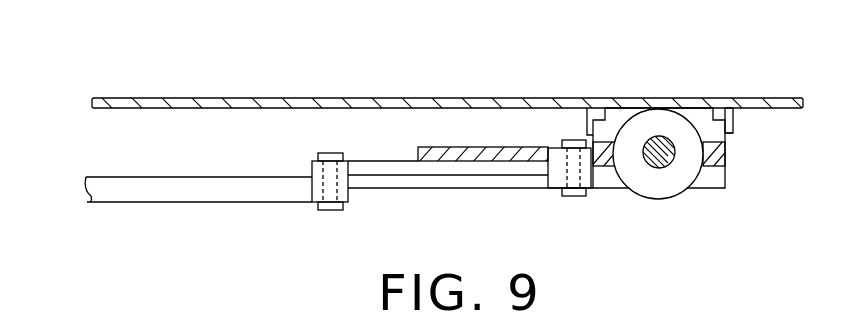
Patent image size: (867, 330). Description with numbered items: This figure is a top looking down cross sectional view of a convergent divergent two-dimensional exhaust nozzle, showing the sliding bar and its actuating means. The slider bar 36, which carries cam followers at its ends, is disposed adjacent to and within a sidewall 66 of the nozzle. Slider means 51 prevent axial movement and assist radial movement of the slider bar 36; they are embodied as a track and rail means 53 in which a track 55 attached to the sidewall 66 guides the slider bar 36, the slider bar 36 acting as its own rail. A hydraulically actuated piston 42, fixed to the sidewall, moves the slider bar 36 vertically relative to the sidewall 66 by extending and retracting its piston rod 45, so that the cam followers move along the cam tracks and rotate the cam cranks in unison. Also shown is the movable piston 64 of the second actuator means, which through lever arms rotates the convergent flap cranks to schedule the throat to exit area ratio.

The sidewall 66 is at (481, 98).
The movable piston 64 is at (277, 202).
The first slider bar 36 is at (725, 188).
The slider means 51 is at (738, 154).
The track and rail means 53 is at (728, 110).
The track 55 is at (732, 132).
The hydraulically actuated piston 42 is at (667, 190).
The piston rod 45 is at (654, 168).